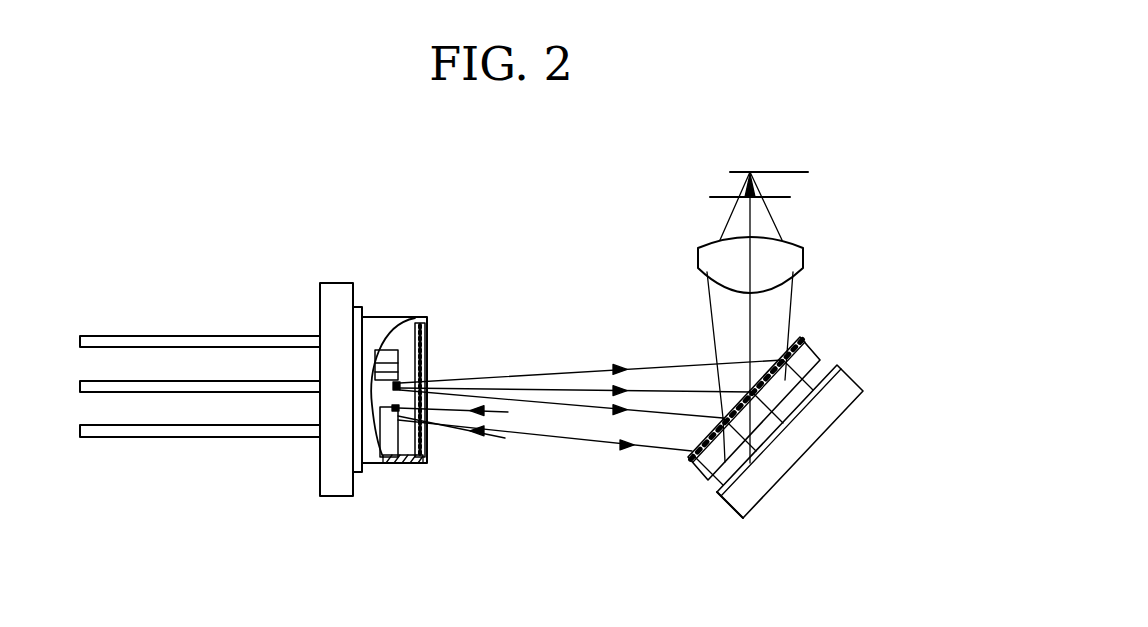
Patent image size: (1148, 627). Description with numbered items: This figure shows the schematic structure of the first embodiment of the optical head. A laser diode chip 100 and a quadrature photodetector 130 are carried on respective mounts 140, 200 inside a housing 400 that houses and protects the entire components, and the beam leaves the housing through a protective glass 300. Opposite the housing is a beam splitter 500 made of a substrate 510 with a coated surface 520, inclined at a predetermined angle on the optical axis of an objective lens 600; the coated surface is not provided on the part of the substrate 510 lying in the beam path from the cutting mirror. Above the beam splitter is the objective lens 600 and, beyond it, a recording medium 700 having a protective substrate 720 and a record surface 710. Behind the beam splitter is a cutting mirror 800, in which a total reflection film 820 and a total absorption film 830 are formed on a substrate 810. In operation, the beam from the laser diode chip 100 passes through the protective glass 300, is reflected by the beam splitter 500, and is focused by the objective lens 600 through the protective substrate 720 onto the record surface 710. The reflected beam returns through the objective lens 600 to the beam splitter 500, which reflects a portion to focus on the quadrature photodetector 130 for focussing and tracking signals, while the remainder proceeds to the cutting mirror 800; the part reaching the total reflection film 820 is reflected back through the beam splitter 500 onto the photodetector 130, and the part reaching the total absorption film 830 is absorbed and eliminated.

The laser diode chip 100 is at (400, 383).
The quadrature photodetector 130 is at (398, 410).
The mount 140 is at (393, 461).
The mount 200 is at (390, 354).
The protective glass 300 is at (418, 357).
The housing 400 is at (367, 452).
The beam splitter 500 is at (756, 408).
The substrate 510 is at (692, 478).
The coated surface 520 is at (690, 456).
The objective lens 600 is at (790, 261).
The recording medium 700 is at (789, 140).
The record surface 710 is at (748, 170).
The protective substrate 720 is at (737, 197).
The cutting mirror 800 is at (791, 465).
The substrate 810 is at (807, 432).
The total reflection film 820 is at (716, 496).
The total absorption film 830 is at (838, 365).